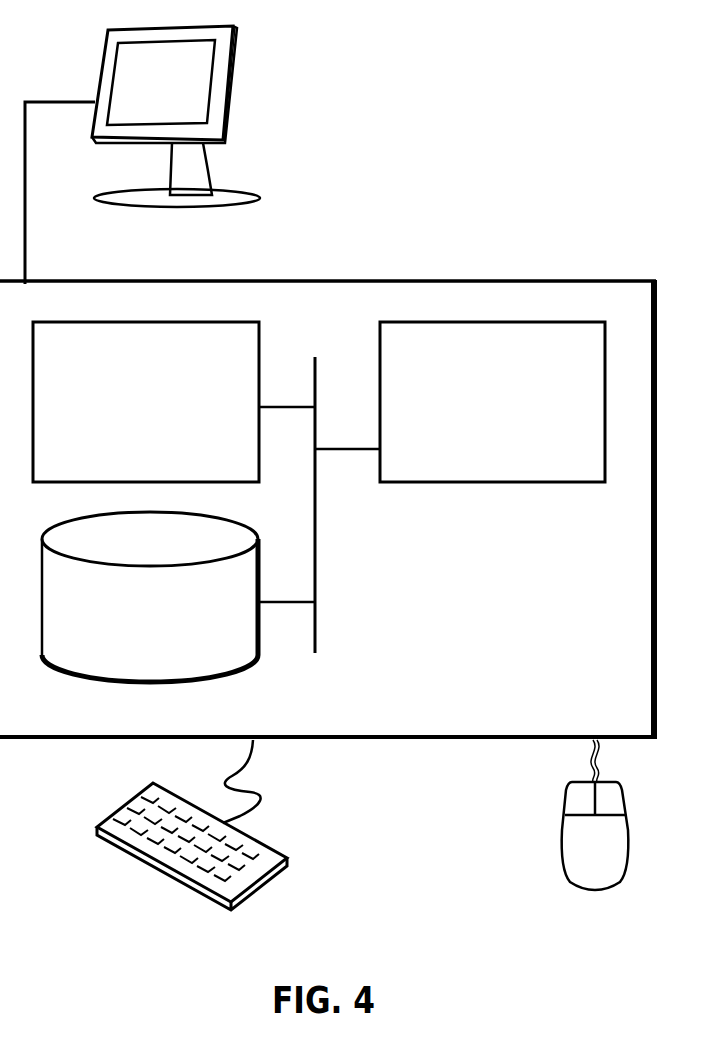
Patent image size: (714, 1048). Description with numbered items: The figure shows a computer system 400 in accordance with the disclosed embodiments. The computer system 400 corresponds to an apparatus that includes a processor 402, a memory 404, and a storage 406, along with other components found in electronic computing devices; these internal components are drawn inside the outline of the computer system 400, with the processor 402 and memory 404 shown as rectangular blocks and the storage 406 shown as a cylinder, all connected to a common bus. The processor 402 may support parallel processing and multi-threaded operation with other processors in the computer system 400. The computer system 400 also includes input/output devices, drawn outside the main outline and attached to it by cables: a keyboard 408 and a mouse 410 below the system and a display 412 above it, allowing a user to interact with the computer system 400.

The computer system 400 is at (370, 258).
The processor 402 is at (518, 414).
The memory 404 is at (167, 414).
The storage 406 is at (172, 626).
The keyboard 408 is at (115, 845).
The mouse 410 is at (615, 856).
The display 412 is at (142, 155).